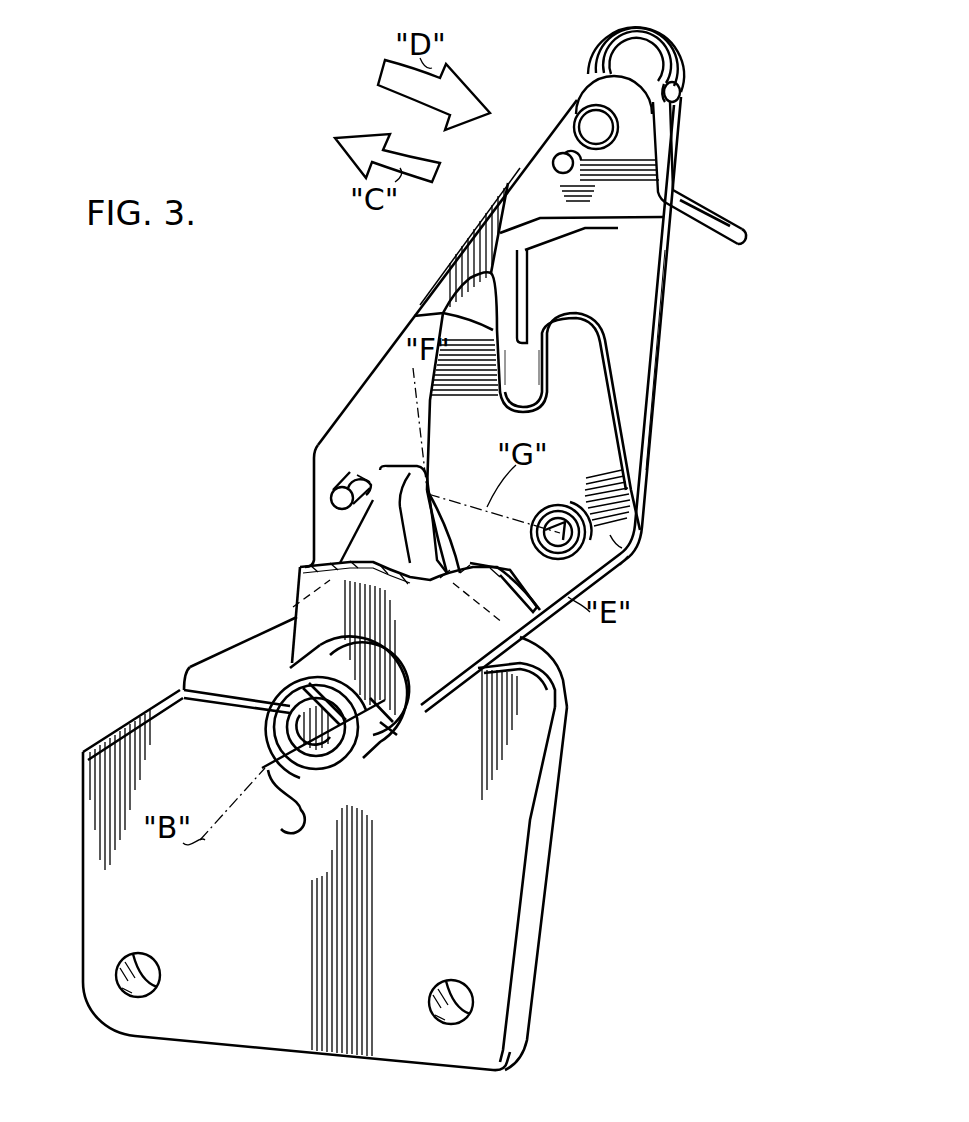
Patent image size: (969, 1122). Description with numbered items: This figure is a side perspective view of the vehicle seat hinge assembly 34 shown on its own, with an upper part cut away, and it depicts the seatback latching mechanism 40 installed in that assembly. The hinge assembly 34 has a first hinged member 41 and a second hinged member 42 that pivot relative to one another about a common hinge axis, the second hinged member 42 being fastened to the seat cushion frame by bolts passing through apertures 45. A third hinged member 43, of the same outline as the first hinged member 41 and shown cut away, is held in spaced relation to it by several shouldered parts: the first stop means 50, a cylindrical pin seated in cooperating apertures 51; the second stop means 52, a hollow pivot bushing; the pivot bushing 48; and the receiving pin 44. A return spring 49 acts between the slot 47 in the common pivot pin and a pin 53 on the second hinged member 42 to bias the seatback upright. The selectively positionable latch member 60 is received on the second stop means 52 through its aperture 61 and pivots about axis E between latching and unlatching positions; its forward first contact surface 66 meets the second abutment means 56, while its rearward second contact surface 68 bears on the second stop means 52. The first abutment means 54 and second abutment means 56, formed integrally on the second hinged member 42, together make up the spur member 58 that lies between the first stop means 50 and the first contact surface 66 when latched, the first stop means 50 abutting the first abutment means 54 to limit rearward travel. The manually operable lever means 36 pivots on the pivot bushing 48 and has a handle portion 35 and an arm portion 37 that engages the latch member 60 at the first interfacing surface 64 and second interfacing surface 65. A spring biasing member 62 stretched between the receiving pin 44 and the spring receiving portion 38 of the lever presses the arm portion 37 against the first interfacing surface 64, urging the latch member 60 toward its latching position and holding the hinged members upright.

The vehicle seat hinge assembly 34 is at (208, 426).
The handle portion 35 is at (718, 242).
The manually operable lever means 36 is at (617, 190).
The arm portion 37 is at (507, 298).
The spring receiving portion 38 is at (686, 100).
The seatback latching mechanism 40 is at (626, 323).
The first hinged member 41 is at (636, 397).
The second hinged member 42 is at (518, 796).
The third hinged member 43 is at (293, 637).
The receiving pin 44 is at (560, 164).
The apertures 45 is at (146, 957).
The slot 47 is at (378, 770).
The pivot bushing 48 is at (580, 95).
The return spring 49 is at (268, 727).
The first stop means 50 is at (340, 490).
The cooperating apertures 51 is at (363, 467).
The second stop means 52 is at (625, 562).
The pin 53 is at (280, 822).
The first abutment means 54 is at (390, 493).
The second abutment means 56 is at (412, 580).
The spur member 58 is at (395, 478).
The selectively positionable latch member 60 is at (624, 417).
The aperture 61 is at (622, 537).
The spring biasing member 62 is at (668, 70).
The first interfacing surface 64 is at (416, 312).
The second interfacing surface 65 is at (551, 358).
The first contact surface 66 is at (428, 495).
The second contact surface 68 is at (553, 498).